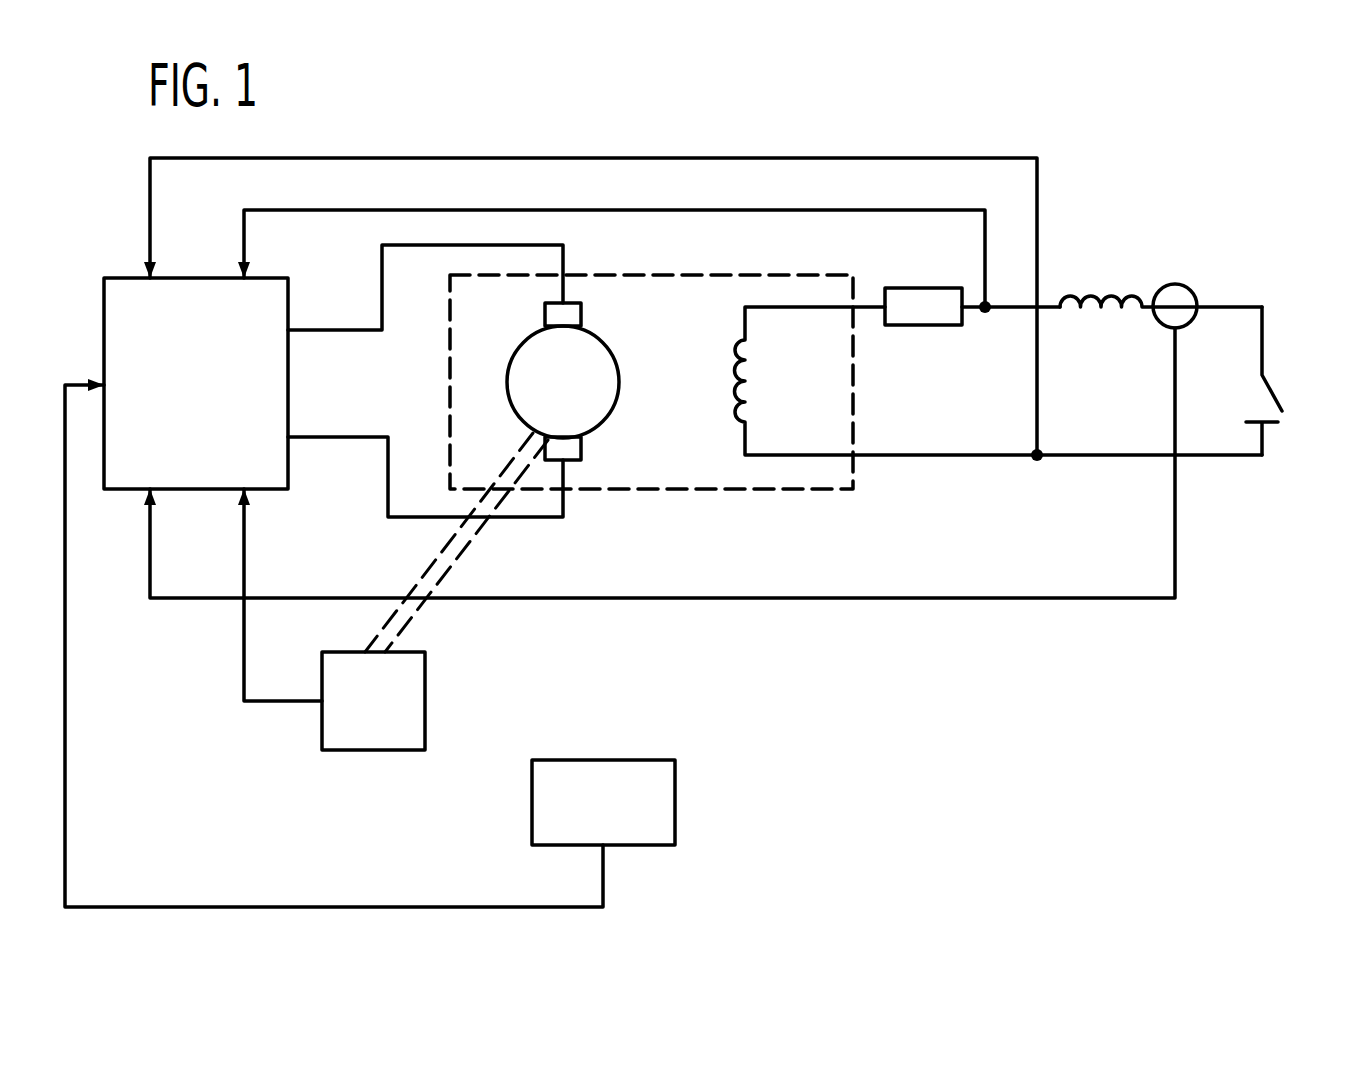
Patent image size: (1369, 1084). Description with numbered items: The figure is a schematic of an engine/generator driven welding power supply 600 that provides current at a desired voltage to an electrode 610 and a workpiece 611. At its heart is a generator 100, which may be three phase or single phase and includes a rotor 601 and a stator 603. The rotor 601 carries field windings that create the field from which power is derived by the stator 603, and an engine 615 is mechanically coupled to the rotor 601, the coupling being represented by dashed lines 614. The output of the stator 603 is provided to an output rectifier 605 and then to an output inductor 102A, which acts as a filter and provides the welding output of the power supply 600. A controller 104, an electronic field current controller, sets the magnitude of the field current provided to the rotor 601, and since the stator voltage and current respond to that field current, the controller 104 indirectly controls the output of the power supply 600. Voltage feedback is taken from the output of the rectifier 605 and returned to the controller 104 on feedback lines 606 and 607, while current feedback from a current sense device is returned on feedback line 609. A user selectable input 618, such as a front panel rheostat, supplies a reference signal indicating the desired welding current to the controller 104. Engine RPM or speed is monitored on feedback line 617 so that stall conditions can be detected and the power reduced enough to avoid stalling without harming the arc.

The controller 104 is at (122, 277).
The feedback line 606 is at (567, 157).
The feedback line 607 is at (652, 209).
The generator 100 is at (838, 272).
The rotor 601 is at (600, 340).
The stator 603 is at (757, 378).
The output rectifier 605 is at (920, 325).
The output inductor 102A is at (1100, 293).
The feedback line 609 is at (833, 598).
The electrode 610 is at (1275, 395).
The workpiece 611 is at (1262, 430).
The dashed lines 614 is at (455, 545).
The engine 615 is at (425, 675).
The feedback line 617 is at (236, 658).
The user selectable input 618 is at (675, 792).
The welding power supply 600 is at (1135, 198).